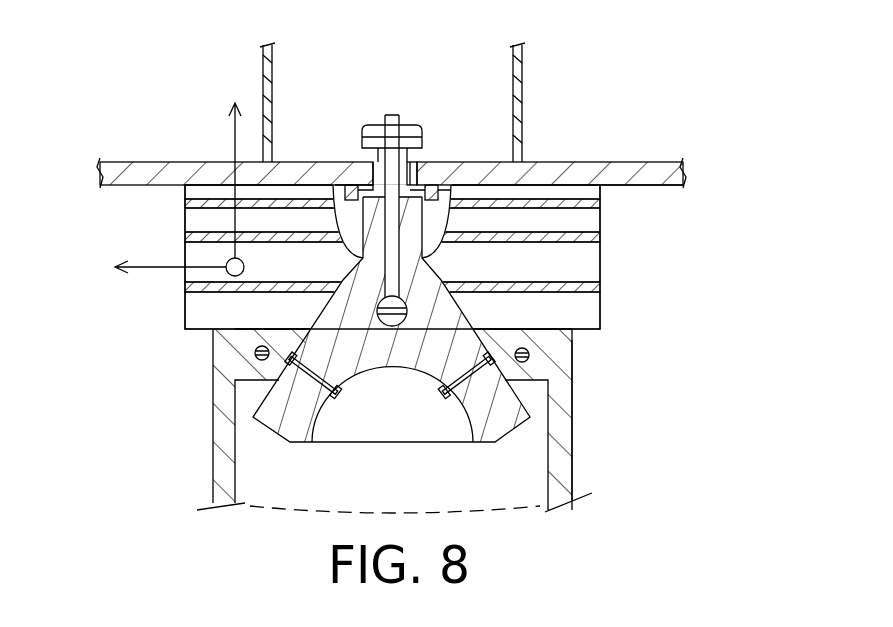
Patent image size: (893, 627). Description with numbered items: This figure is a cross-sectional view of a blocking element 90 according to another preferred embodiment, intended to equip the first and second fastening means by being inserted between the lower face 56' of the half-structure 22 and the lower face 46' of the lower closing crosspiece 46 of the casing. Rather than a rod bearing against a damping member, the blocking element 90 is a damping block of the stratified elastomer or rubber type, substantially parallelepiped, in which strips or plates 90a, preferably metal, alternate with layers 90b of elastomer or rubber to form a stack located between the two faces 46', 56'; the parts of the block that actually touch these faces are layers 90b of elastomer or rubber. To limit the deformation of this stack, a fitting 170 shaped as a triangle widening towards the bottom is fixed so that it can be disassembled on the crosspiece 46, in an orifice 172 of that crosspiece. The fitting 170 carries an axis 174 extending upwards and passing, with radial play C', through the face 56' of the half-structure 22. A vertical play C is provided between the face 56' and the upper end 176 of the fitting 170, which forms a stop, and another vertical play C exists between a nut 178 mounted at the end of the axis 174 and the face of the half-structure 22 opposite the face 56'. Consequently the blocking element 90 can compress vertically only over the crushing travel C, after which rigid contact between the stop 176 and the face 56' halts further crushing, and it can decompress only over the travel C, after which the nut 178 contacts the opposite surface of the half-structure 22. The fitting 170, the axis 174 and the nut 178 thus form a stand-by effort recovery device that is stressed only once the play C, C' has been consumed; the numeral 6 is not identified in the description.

The burner body 6 is at (575, 460).
The half-structure 22 is at (552, 161).
The lower closing crosspiece 46 is at (430, 406).
The lower face of the lower closing crosspiece 46' is at (449, 314).
The lower face of the half-structure 56' is at (660, 204).
The blocking element 90 is at (383, 229).
The strips or plates 90a is at (185, 201).
The layers of elastomer or rubber 90b is at (195, 185).
The fitting 170 is at (275, 428).
The orifice 172 is at (305, 345).
The axis 174 is at (392, 115).
The upper end of the fitting 176 is at (345, 187).
The nut 178 is at (378, 137).
The vertical play C is at (433, 151).
The radial play C' is at (355, 151).